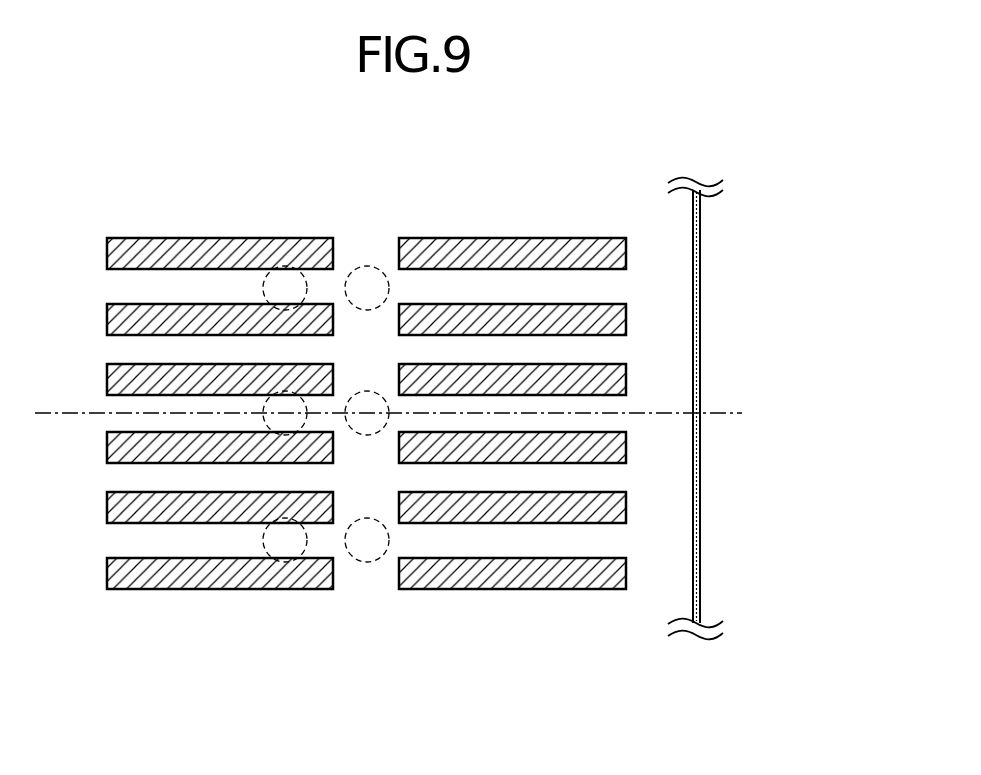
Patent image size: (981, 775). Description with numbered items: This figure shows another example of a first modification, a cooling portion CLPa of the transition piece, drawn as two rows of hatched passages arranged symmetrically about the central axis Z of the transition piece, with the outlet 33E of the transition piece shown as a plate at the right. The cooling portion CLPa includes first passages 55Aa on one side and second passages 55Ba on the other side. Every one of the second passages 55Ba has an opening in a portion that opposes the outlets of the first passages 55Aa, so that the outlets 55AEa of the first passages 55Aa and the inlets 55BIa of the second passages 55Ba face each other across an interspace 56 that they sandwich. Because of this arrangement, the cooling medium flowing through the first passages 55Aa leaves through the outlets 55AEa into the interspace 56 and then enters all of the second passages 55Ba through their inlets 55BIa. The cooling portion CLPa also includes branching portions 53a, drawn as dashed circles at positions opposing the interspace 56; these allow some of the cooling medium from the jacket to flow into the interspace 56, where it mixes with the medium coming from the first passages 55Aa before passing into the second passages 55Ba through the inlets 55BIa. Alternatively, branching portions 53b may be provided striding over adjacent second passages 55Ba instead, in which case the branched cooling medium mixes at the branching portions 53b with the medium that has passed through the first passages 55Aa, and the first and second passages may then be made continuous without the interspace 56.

The cooling portion CLPa is at (97, 145).
The second passages 55Ba is at (163, 405).
The first passages 55Aa is at (583, 408).
The inlets of the second passages 55BIa is at (338, 400).
The outlets of the first passages 55AEa is at (408, 353).
The branching portions 53b is at (262, 398).
The branching portions 53a is at (387, 398).
The interspace 56 is at (378, 510).
The outlet 33E is at (702, 302).
The central axis Z is at (757, 416).